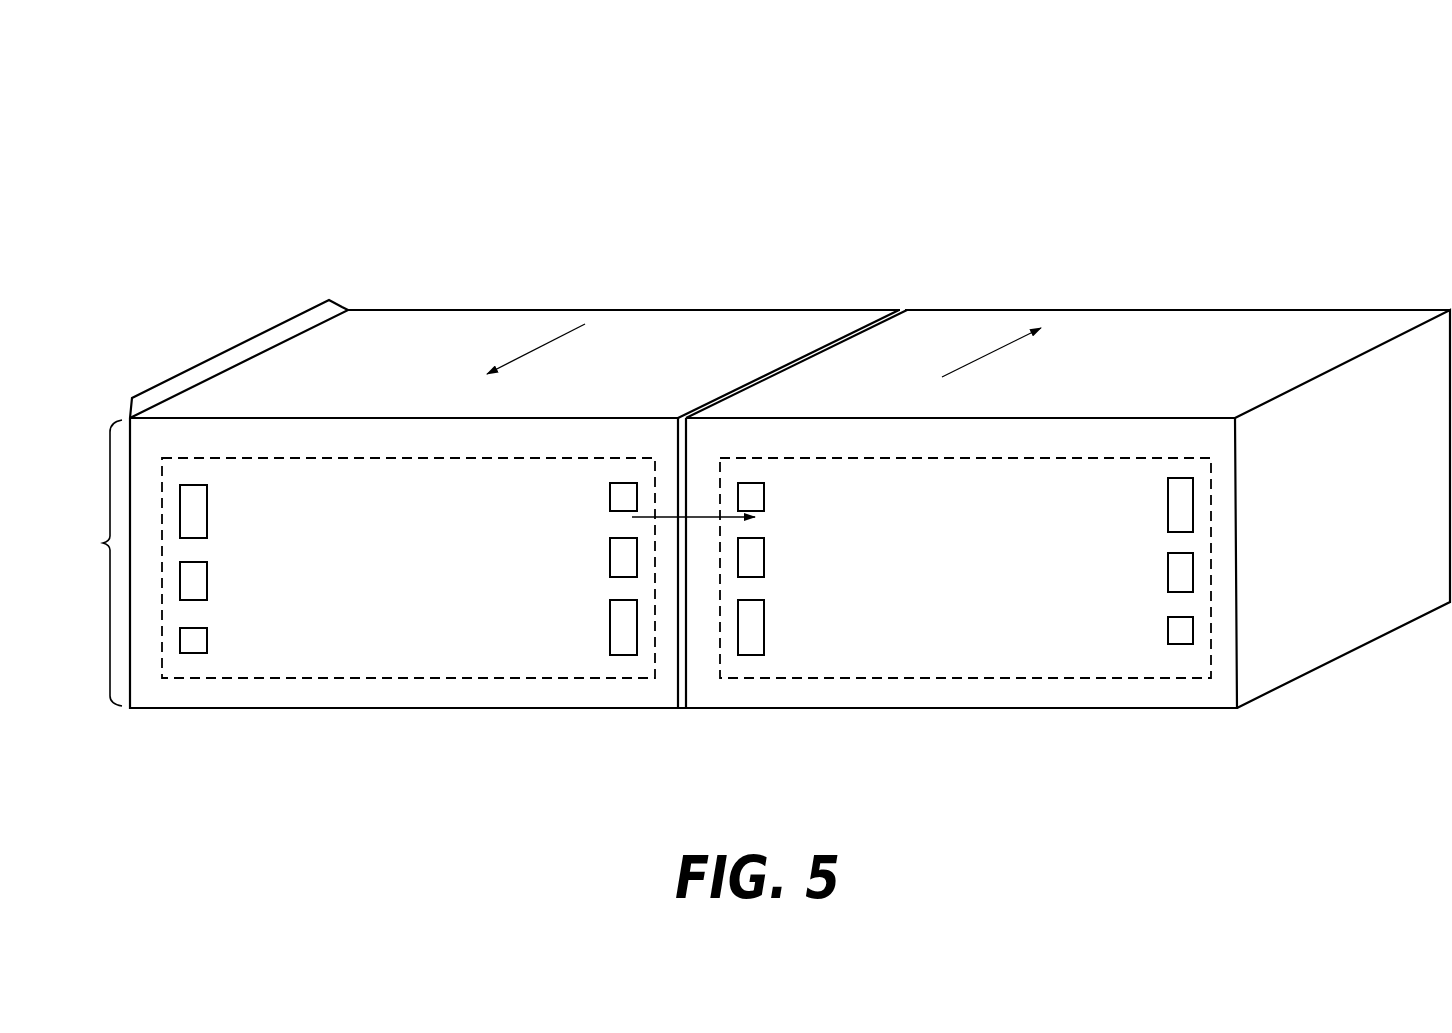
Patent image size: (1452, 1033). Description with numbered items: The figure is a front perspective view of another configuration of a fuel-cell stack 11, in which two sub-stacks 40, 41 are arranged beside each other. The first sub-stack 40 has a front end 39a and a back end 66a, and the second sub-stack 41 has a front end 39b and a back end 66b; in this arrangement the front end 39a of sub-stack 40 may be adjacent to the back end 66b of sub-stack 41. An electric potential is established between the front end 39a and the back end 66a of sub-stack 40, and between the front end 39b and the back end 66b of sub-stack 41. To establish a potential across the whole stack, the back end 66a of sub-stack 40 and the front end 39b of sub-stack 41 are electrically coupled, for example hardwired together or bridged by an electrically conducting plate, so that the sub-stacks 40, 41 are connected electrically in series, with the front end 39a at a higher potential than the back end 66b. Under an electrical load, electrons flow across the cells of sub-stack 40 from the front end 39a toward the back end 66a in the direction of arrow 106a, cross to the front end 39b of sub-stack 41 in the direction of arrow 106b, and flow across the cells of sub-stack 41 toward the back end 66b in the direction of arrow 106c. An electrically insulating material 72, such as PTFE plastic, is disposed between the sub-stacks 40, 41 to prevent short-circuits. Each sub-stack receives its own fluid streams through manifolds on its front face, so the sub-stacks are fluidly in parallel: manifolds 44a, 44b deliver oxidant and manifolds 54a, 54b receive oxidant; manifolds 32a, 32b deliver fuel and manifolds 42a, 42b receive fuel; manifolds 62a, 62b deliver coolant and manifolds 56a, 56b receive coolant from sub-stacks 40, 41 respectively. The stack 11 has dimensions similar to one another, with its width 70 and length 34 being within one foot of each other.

The fuel-cell stack 11 is at (1064, 136).
The length 34 is at (237, 345).
The front end of sub-stack 40 39a is at (658, 308).
The front end of sub-stack 41 39b is at (1062, 433).
The sub-stack 40 is at (300, 680).
The sub-stack 41 is at (905, 680).
The manifold 42a is at (610, 498).
The manifold 42b is at (764, 498).
The manifold 44a is at (610, 628).
The manifold 44b is at (764, 638).
The manifold 54a is at (207, 507).
The manifold 54b is at (1168, 492).
The manifold 56a is at (207, 580).
The manifold 56b is at (1168, 570).
The manifold 32a is at (207, 640).
The manifold 32b is at (1168, 628).
The manifold 62a is at (610, 557).
The manifold 62b is at (764, 565).
The back end of sub-stack 40 66a is at (598, 430).
The back end of sub-stack 41 66b is at (1203, 308).
The width 70 is at (103, 543).
The electrically insulating material 72 is at (797, 365).
The arrow 106a is at (535, 345).
The arrow 106b is at (740, 520).
The arrow 106c is at (993, 347).